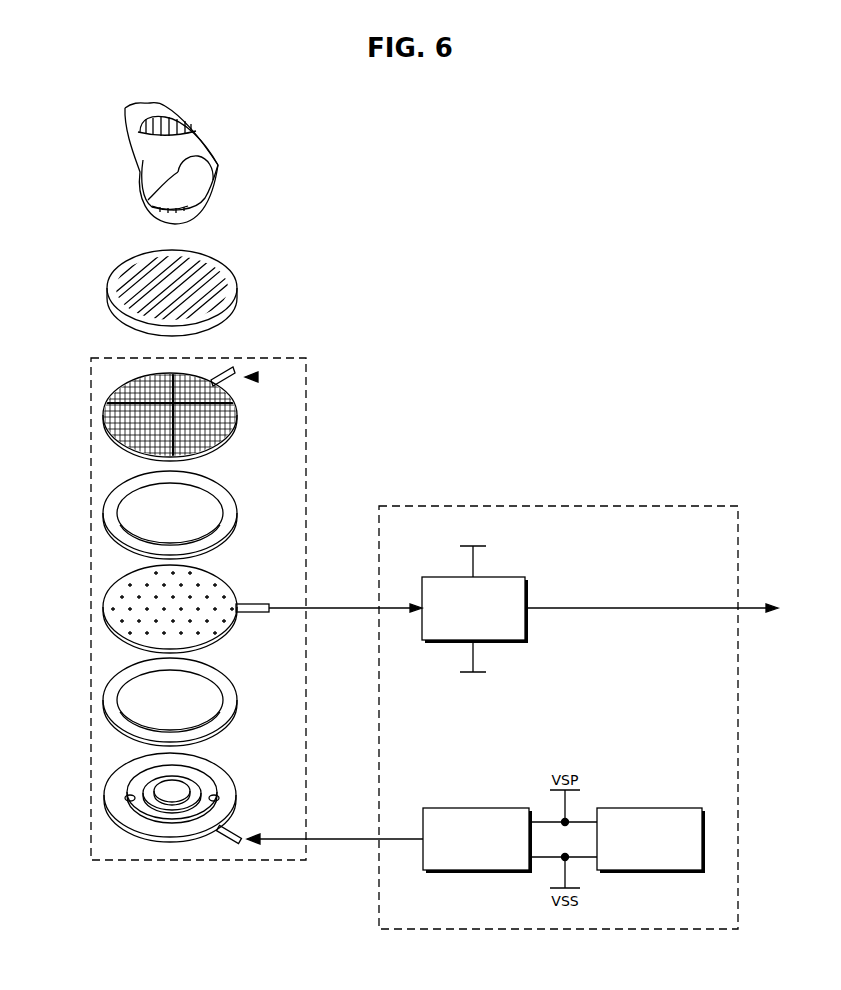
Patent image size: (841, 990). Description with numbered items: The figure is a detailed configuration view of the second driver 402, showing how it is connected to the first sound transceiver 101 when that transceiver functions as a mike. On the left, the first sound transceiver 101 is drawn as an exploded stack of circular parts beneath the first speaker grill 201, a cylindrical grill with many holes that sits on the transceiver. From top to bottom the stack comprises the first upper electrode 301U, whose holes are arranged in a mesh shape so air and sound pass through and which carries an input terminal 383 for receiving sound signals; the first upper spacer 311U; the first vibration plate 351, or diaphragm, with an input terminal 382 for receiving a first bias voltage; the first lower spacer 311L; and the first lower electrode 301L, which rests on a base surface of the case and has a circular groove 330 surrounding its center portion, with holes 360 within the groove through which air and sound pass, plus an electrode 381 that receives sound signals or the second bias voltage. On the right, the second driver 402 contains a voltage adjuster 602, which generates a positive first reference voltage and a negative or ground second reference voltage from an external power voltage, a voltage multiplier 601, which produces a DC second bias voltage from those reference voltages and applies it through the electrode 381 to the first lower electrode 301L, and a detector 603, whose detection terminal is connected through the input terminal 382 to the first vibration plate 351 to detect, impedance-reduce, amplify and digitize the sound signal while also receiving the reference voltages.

The first speaker grill 201 is at (108, 283).
The first sound transceiver 101 is at (198, 862).
The first upper electrode 301U is at (118, 405).
The input terminal 383 is at (240, 368).
The first upper spacer 311U is at (115, 513).
The first vibration plate 351 is at (110, 606).
The input terminal 382 is at (252, 603).
The first lower spacer 311L is at (115, 700).
The groove 330 is at (130, 775).
The first lower electrode 301L is at (117, 785).
The hole 360 is at (130, 792).
The electrode 381 is at (244, 830).
The second driver 402 is at (563, 505).
The detector 603 is at (500, 577).
The voltage multiplier 601 is at (475, 808).
The voltage adjuster 602 is at (648, 808).